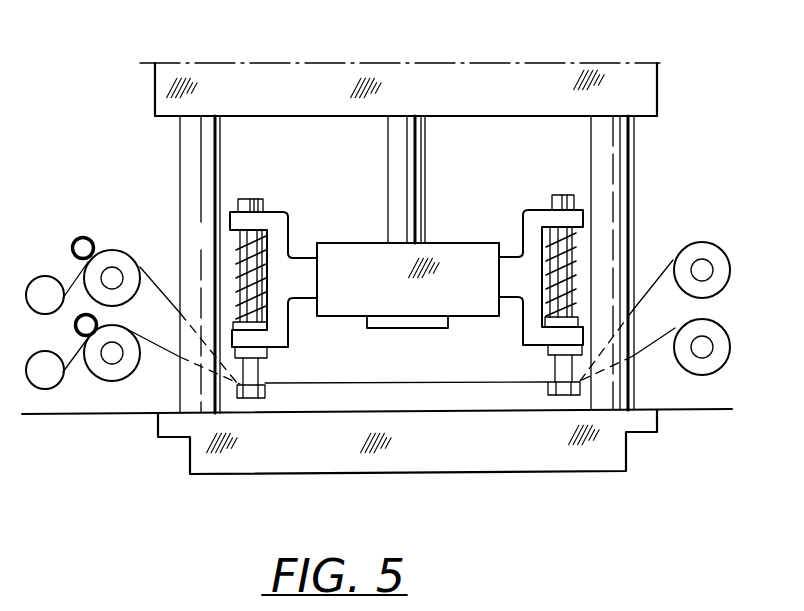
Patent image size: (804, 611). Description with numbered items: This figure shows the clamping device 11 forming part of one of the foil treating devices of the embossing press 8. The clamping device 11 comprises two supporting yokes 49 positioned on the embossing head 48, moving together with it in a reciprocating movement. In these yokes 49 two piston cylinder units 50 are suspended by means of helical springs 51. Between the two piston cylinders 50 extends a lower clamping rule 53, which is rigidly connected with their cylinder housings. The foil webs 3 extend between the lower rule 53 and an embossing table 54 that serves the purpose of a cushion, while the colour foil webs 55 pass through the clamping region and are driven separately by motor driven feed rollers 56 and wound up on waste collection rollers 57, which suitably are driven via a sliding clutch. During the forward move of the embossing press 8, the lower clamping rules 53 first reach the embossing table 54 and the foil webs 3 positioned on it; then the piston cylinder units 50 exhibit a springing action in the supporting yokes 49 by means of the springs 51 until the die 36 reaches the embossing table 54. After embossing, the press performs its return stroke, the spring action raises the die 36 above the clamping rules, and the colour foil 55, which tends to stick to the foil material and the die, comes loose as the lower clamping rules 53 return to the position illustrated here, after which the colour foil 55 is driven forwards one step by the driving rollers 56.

The foil webs 3 is at (102, 417).
The embossing press 8 is at (660, 140).
The clamping device 11 is at (512, 222).
The die 36 is at (410, 328).
The embossing head 48 is at (355, 265).
The supporting yokes 49 is at (278, 233).
The piston cylinder units 50 is at (232, 272).
The helical springs 51 is at (253, 199).
The lower clamping rule 53 is at (267, 392).
The embossing table 54 is at (322, 440).
The colour foil webs 55 is at (655, 275).
The feed rollers 56 is at (82, 250).
The waste collection rollers 57 is at (45, 298).